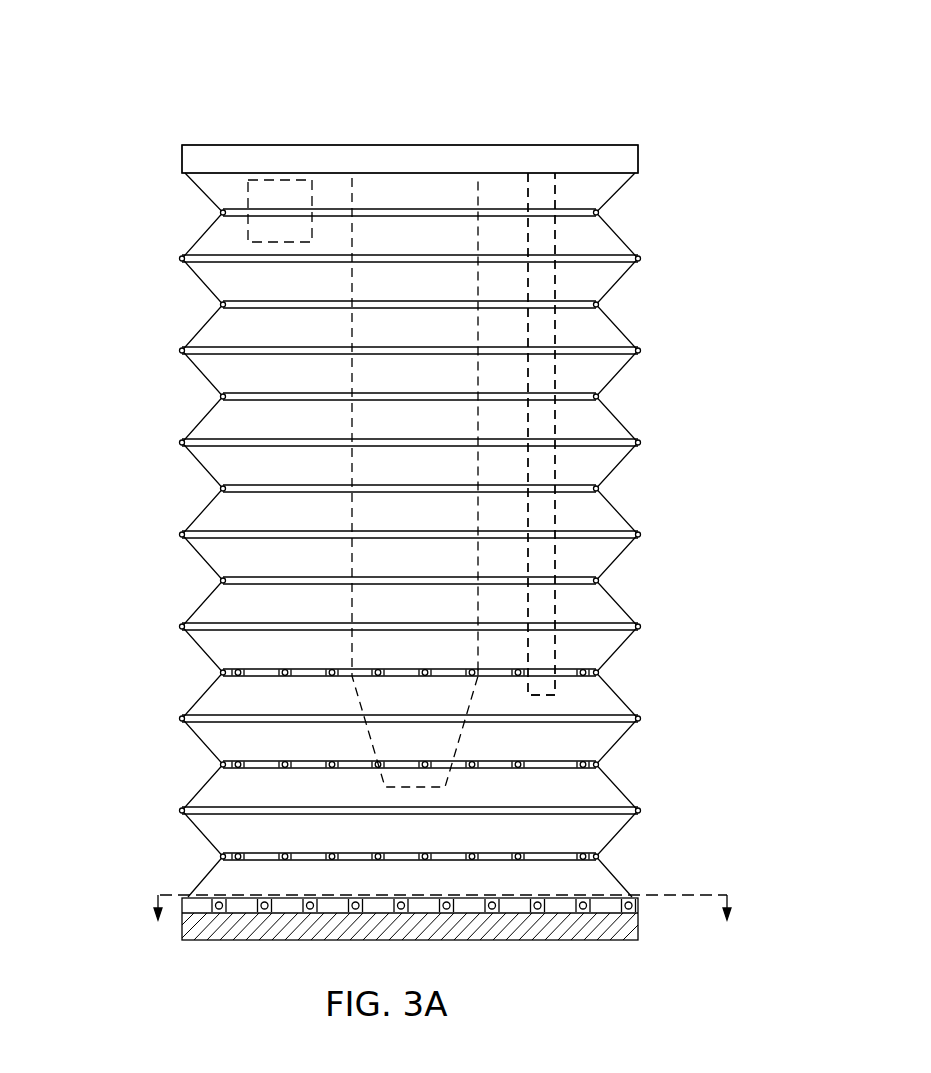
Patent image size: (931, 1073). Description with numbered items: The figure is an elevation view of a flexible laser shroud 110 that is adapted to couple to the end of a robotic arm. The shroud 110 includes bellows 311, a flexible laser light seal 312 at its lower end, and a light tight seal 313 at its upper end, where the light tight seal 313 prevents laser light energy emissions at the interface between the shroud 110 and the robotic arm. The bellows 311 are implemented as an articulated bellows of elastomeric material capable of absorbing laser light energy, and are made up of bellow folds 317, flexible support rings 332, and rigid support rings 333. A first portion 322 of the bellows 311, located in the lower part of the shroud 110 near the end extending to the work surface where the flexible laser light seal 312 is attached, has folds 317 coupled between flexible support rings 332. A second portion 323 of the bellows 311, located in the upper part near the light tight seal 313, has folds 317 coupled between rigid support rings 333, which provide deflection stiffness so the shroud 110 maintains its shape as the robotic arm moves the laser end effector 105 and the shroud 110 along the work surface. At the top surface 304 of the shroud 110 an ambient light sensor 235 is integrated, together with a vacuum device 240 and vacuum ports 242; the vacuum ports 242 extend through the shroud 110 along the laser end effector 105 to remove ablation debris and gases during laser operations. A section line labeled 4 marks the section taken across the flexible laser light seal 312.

The flexible laser shroud 110 is at (577, 84).
The top surface 304 is at (211, 140).
The light tight seal 313 is at (640, 154).
The bellow folds 317 is at (182, 258).
The rigid support rings 333 is at (598, 212).
The flexible support rings 332 is at (598, 672).
The ambient light sensor 235 is at (248, 192).
The laser end effector 105 is at (352, 288).
The vacuum device 240 is at (528, 190).
The vacuum ports 242 is at (541, 434).
The flexible laser light seal 312 is at (650, 899).
The section line 4- 4 is at (441, 924).
The bellows 311 is at (78, 172).
The second portion 323 is at (722, 185).
The first portion 322 is at (730, 622).